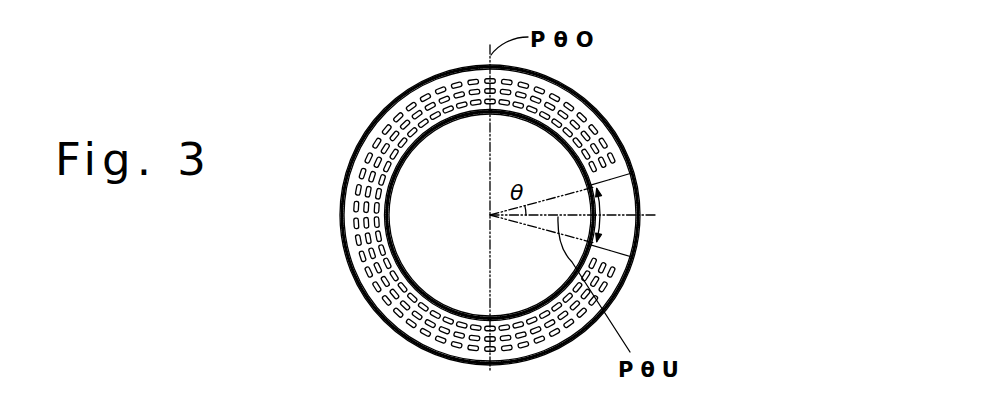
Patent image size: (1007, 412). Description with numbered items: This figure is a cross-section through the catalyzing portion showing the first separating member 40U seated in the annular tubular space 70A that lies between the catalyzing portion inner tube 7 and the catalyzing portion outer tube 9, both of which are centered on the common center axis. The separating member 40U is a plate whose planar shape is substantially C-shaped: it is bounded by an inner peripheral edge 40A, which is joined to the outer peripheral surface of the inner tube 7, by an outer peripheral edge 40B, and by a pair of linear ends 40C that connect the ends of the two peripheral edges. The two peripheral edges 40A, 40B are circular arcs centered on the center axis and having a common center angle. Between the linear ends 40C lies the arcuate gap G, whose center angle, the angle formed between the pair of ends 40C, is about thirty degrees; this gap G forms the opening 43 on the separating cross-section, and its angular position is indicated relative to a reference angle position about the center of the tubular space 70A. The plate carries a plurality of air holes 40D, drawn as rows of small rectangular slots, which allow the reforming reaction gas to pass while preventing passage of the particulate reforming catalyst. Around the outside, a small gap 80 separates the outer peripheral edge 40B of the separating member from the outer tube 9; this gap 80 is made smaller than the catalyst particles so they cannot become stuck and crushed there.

The catalyzing portion inner tube 7 is at (382, 250).
The catalyzing portion outer tube 9 is at (340, 223).
The tubular space 70A is at (575, 100).
The gap 80 is at (605, 120).
The inner peripheral edge 40A is at (357, 153).
The outer peripheral edge 40B is at (398, 170).
The first separating member 40U is at (622, 152).
The air holes 40D is at (605, 284).
The linear ends 40C is at (618, 194).
The opening 43 is at (612, 208).
The arcuate gap G is at (612, 222).